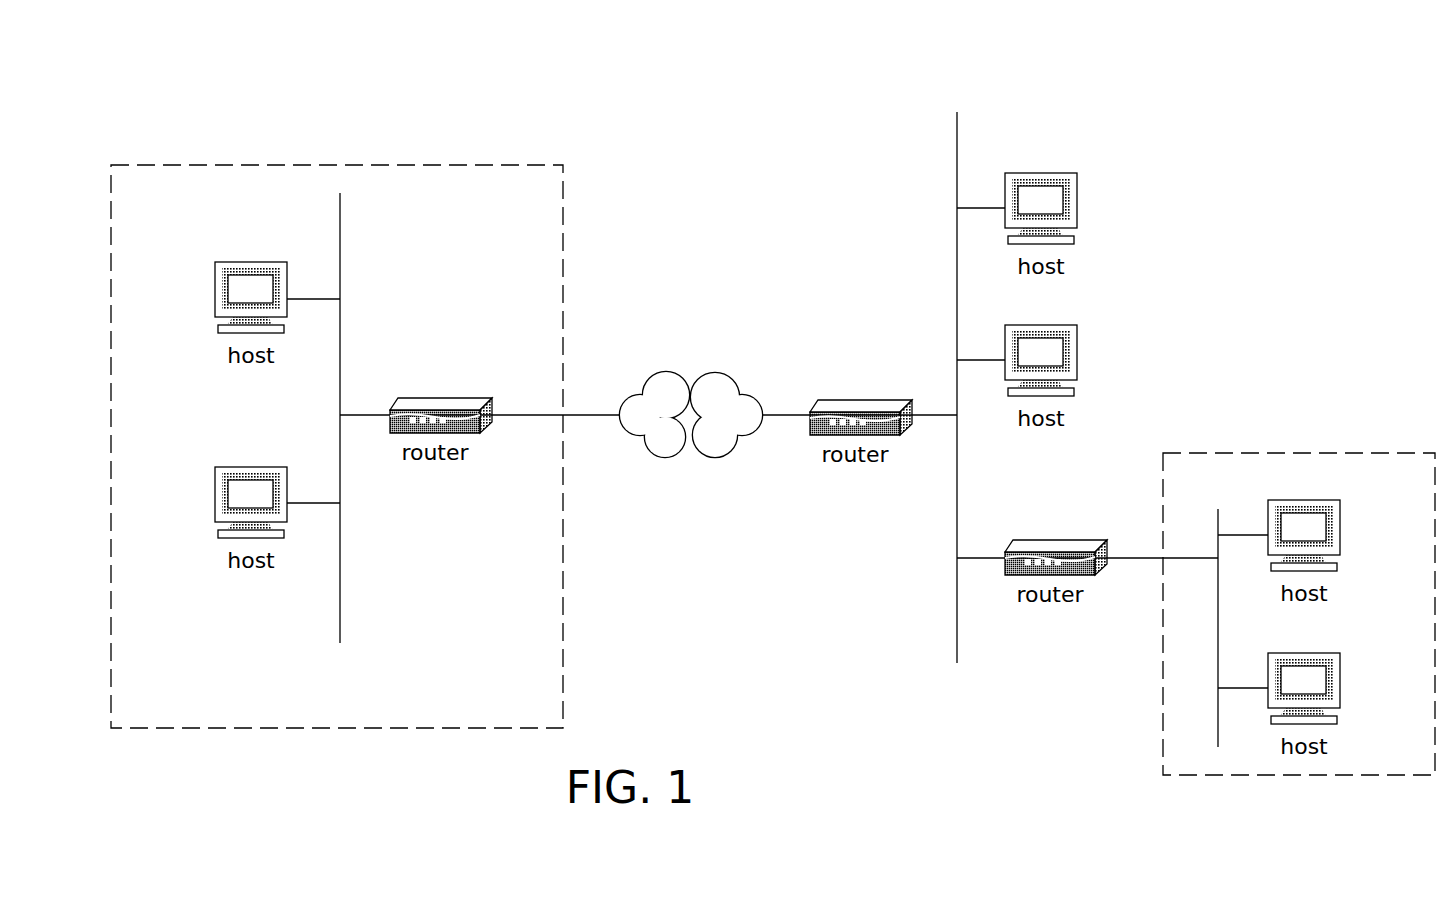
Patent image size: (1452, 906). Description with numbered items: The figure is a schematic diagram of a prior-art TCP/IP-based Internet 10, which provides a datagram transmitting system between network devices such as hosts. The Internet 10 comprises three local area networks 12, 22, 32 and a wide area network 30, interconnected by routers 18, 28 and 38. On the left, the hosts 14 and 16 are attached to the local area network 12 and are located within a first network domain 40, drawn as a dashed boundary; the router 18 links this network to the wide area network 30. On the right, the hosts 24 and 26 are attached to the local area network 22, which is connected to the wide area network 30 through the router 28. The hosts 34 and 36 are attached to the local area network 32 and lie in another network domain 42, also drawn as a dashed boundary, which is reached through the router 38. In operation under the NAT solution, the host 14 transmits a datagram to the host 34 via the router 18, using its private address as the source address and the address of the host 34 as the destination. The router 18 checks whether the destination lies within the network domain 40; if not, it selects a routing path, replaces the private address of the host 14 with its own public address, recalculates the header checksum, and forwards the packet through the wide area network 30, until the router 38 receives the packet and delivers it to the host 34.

The Internet 10 is at (818, 126).
The local area network 12 is at (340, 586).
The host 14 is at (218, 508).
The host 16 is at (218, 305).
The router 18 is at (440, 397).
The local area network 22 is at (957, 168).
The host 24 is at (1076, 335).
The host 26 is at (1076, 182).
The router 28 is at (840, 398).
The wide area network 30 is at (665, 457).
The local area network 32 is at (1218, 660).
The host 34 is at (1340, 663).
The host 36 is at (1340, 510).
The router 38 is at (1070, 540).
The network domain 40 is at (563, 167).
The network domain 42 is at (1280, 452).